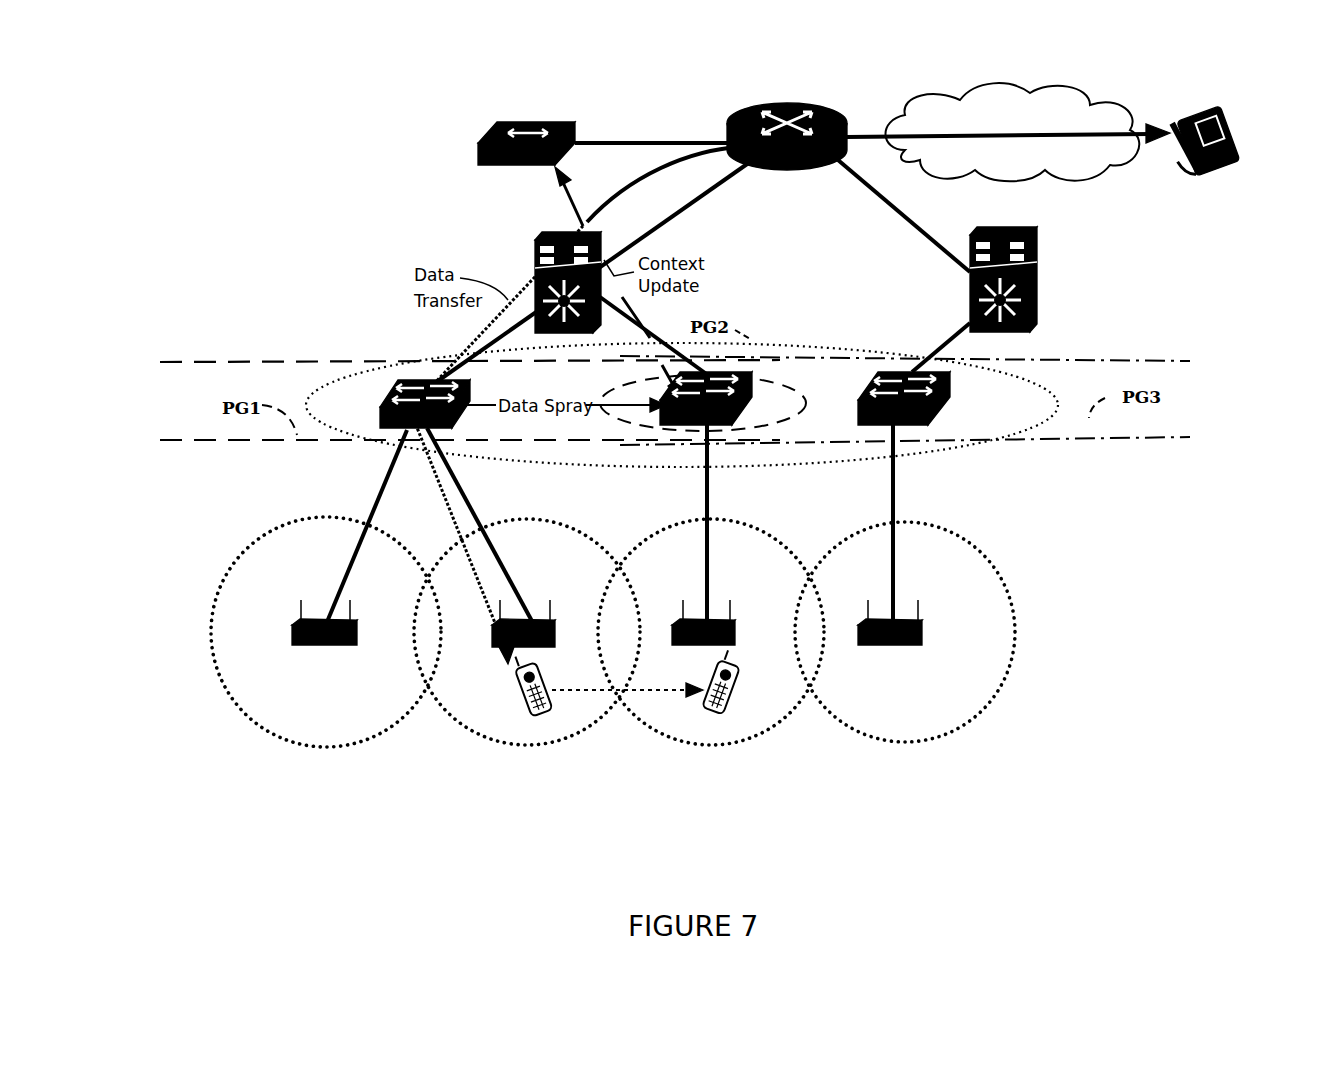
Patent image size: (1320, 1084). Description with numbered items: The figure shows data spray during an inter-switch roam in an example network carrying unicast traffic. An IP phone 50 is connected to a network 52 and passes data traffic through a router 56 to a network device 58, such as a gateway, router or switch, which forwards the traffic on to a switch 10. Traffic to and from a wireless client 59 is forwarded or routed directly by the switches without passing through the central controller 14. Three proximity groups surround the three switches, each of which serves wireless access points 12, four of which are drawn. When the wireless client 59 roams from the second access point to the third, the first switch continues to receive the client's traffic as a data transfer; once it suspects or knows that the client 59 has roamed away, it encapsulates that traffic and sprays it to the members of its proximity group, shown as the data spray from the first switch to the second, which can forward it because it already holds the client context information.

The switch 10 is at (952, 393).
The access point 12 is at (315, 646).
The central controller 14 is at (497, 131).
The IP phone 50 is at (1200, 108).
The network 52 is at (988, 92).
The router 56 is at (755, 104).
The network device 58 is at (535, 240).
The wireless client 59 is at (522, 692).